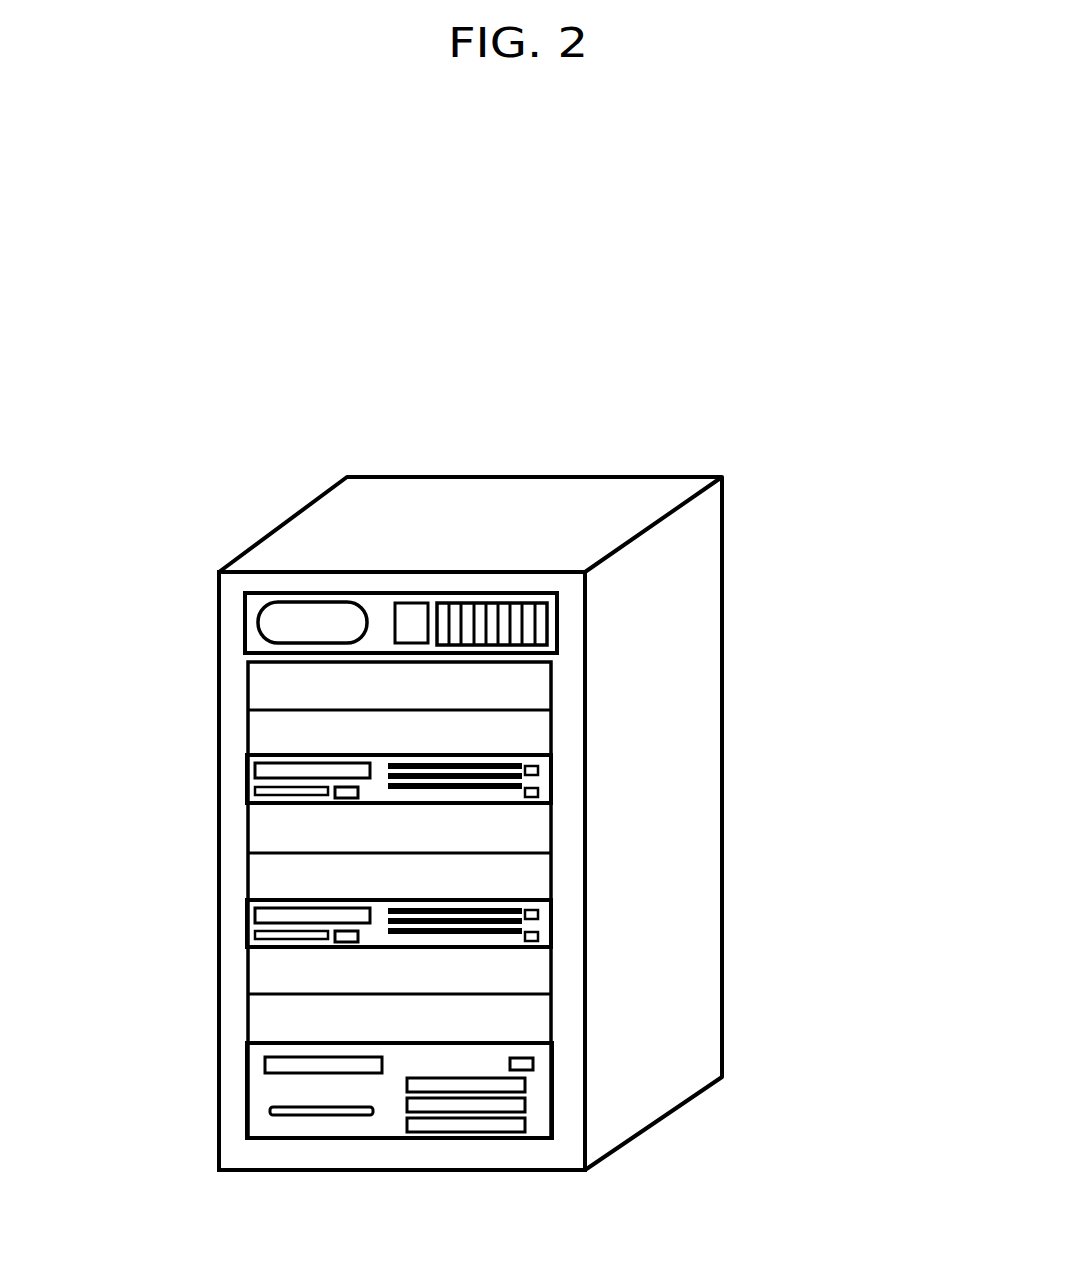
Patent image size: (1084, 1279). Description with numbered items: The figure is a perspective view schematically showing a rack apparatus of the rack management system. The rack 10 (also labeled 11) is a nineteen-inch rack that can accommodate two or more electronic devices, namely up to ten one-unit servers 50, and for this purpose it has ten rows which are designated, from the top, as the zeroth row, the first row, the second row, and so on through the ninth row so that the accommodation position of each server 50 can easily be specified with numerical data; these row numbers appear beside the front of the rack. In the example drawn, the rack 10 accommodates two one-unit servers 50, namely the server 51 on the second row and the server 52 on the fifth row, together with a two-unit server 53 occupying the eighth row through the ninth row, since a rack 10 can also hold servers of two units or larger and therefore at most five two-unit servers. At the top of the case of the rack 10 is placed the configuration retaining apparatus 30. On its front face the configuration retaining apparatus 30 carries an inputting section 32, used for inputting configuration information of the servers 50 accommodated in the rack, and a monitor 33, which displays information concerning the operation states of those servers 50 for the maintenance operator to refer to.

The rack 10 is at (399, 704).
The rack mount frame 11 is at (360, 465).
The configuration retaining apparatus 30 is at (560, 485).
The inputting section 32 is at (492, 620).
The monitor 33 is at (328, 623).
The server 50 is at (586, 937).
The 1 U server 51 is at (568, 793).
The 1 U server 52 is at (567, 933).
The 2 U server 53 is at (567, 1089).